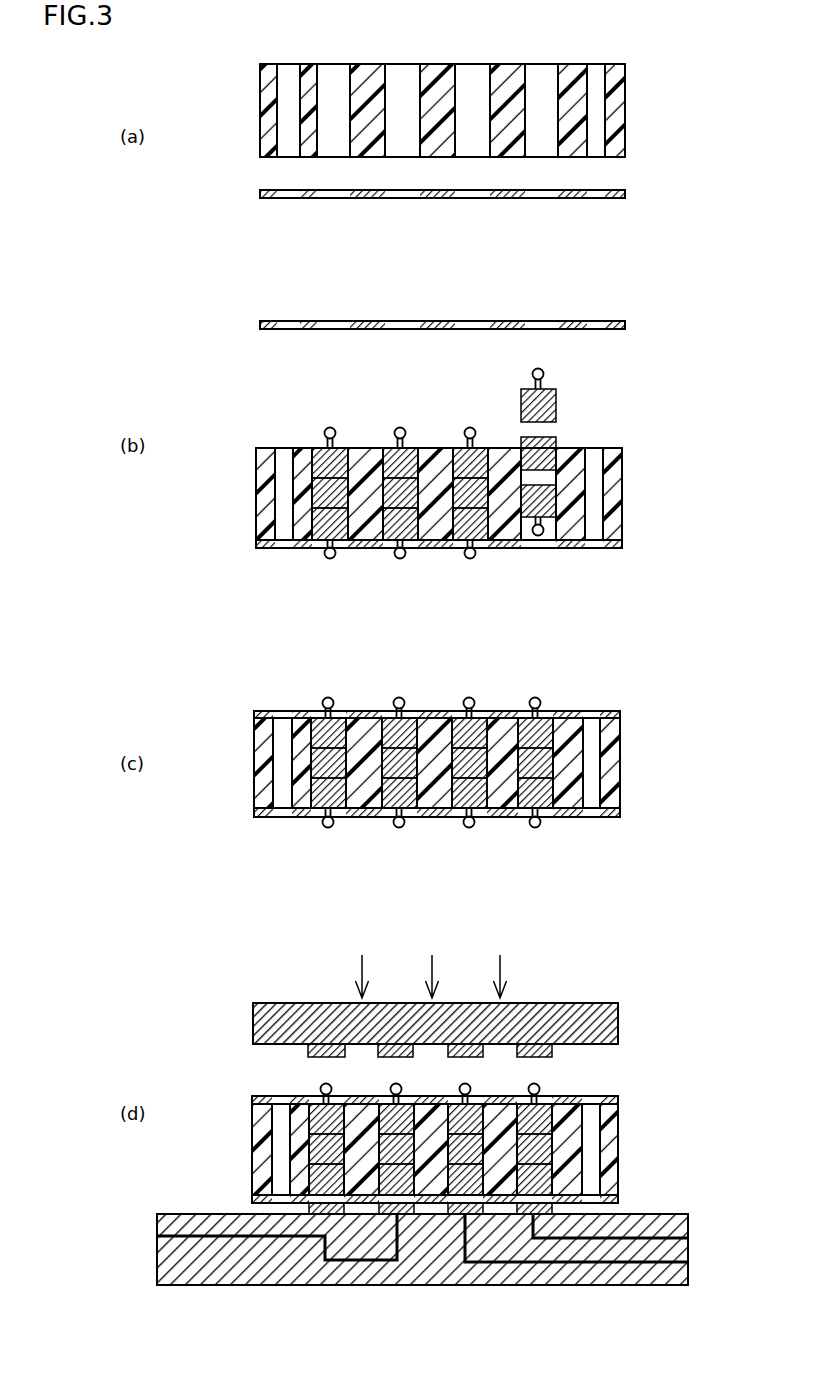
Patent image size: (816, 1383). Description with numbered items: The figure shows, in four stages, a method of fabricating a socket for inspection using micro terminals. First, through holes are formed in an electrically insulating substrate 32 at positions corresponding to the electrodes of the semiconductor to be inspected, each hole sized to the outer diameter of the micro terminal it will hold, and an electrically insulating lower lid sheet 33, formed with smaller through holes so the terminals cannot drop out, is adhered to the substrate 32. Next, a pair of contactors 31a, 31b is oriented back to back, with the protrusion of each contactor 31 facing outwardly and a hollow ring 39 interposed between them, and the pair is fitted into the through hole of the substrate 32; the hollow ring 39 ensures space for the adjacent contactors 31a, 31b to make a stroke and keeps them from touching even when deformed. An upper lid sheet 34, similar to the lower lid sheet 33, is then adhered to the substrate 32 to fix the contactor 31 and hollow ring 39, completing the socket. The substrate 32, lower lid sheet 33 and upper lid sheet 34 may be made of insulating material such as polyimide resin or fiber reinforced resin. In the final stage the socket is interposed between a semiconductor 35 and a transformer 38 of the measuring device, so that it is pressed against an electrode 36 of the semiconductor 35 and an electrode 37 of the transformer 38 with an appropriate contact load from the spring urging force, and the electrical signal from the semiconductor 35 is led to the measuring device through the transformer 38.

The contactor 31 is at (552, 782).
The contactor 31a is at (556, 407).
The contactor 31b is at (553, 497).
The electrically insulating substrate 32 is at (617, 112).
The lower lid sheet 33 is at (622, 194).
The upper lid sheet 34 is at (622, 325).
The semiconductor 35 is at (597, 1027).
The electrode 36 is at (553, 1050).
The electrode 37 is at (552, 1208).
The transformer 38 is at (680, 1250).
The hollow ring 39 is at (509, 470).